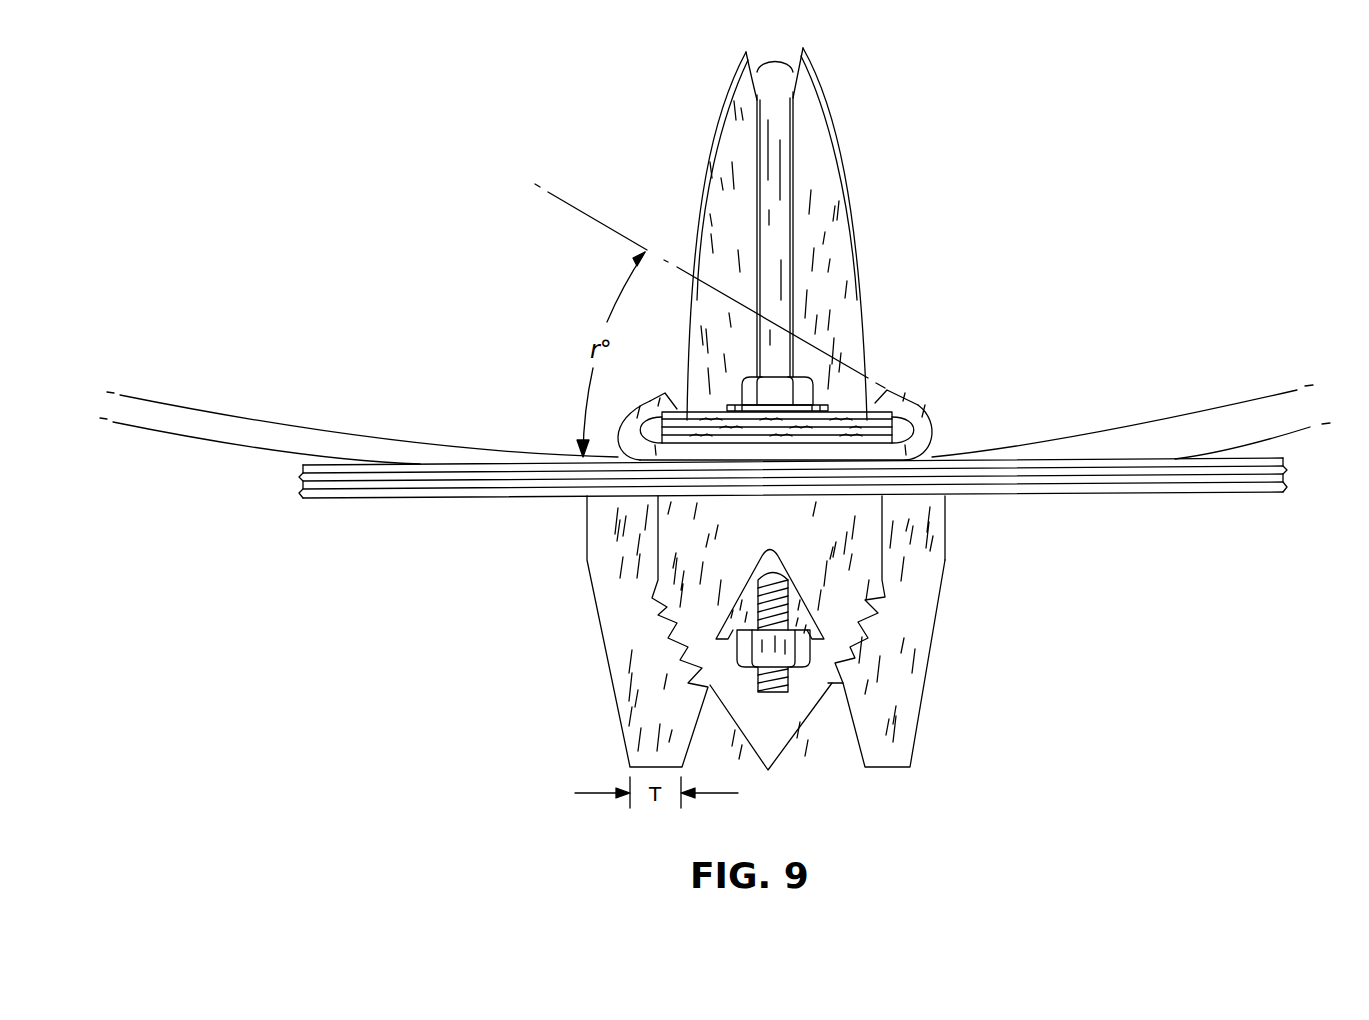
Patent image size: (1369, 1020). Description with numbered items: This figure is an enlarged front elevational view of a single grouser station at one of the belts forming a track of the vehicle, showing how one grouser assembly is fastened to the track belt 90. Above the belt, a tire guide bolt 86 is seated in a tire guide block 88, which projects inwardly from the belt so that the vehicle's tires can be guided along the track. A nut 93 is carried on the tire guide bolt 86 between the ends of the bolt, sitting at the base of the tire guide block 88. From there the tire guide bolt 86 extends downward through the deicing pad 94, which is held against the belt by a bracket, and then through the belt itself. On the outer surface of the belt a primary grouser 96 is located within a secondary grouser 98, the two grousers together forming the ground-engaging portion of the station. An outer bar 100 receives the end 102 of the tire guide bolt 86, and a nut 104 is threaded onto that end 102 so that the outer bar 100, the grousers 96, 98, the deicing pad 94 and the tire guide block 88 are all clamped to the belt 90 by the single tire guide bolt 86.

The tire guide bolt 86 is at (773, 250).
The tire guide block 88 is at (842, 189).
The skin panels 90 is at (558, 488).
The nut 93 is at (808, 386).
The deicing pad 94 is at (888, 408).
The primary grouser 96 is at (853, 575).
The secondary grouser 98 is at (912, 622).
The outer bar 100 is at (817, 618).
The end of bolt 102 is at (784, 691).
The nut 104 is at (750, 670).